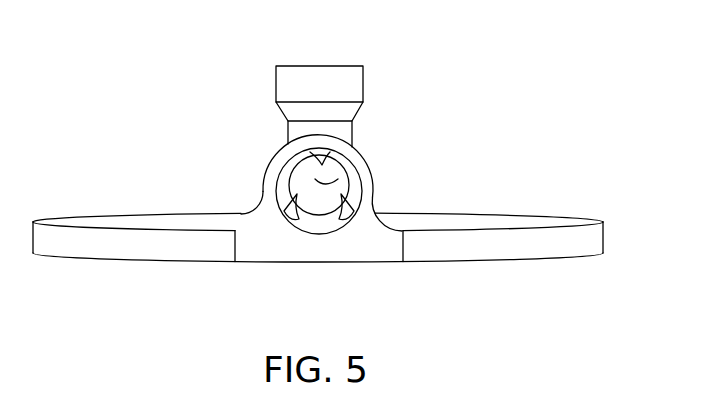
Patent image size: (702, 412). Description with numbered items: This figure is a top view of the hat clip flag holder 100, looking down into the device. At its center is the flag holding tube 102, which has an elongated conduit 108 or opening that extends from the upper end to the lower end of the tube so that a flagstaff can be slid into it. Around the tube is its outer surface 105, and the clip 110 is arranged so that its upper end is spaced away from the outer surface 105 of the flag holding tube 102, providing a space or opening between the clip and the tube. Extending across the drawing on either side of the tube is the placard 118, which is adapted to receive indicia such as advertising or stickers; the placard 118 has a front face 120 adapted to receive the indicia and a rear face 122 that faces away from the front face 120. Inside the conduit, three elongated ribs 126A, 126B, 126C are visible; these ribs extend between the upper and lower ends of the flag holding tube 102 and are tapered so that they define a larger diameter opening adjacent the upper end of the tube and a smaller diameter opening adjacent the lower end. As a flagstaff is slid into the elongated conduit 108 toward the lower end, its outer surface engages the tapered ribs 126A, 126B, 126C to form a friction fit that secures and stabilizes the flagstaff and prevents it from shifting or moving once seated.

The hat clip flag holder 100 is at (466, 62).
The flag holding tube 102 is at (375, 178).
The outer surface 105 is at (265, 172).
The elongated conduit 108 is at (347, 158).
The clip 110 is at (318, 68).
The placard 118 is at (76, 247).
The front face 120 is at (535, 258).
The rear face 122 is at (537, 222).
The elongated rib 126A is at (308, 164).
The elongated rib 126B is at (345, 226).
The elongated rib 126C is at (293, 226).